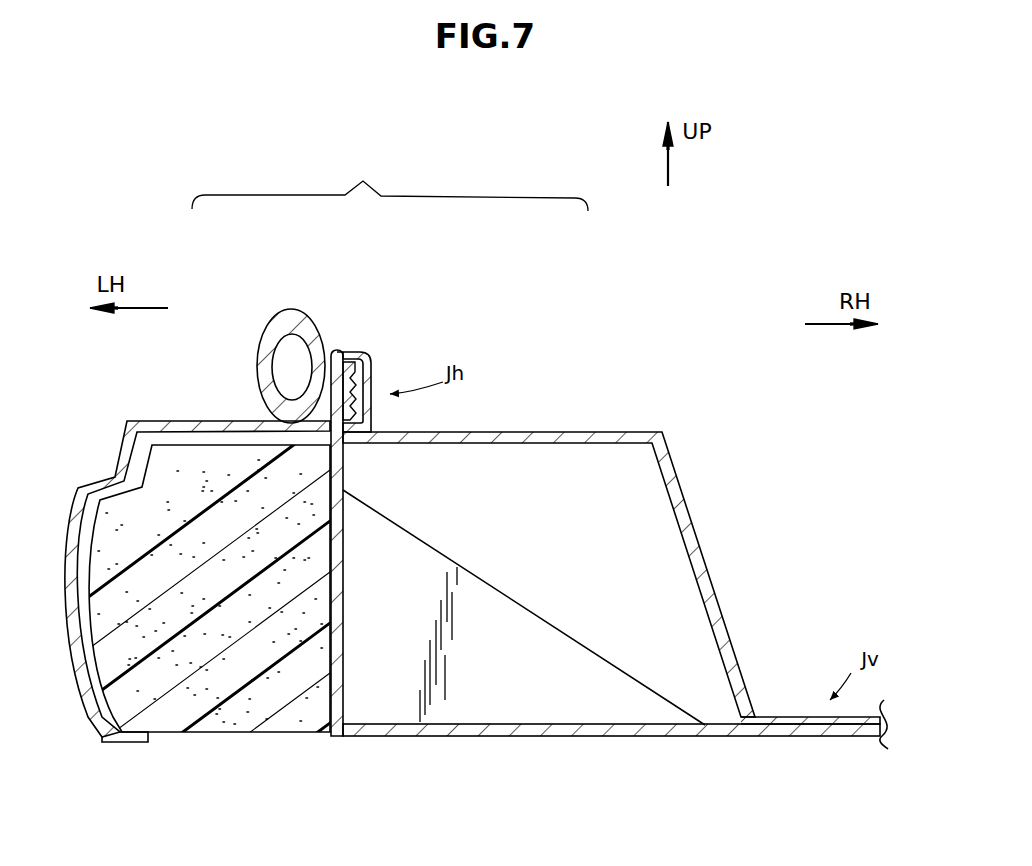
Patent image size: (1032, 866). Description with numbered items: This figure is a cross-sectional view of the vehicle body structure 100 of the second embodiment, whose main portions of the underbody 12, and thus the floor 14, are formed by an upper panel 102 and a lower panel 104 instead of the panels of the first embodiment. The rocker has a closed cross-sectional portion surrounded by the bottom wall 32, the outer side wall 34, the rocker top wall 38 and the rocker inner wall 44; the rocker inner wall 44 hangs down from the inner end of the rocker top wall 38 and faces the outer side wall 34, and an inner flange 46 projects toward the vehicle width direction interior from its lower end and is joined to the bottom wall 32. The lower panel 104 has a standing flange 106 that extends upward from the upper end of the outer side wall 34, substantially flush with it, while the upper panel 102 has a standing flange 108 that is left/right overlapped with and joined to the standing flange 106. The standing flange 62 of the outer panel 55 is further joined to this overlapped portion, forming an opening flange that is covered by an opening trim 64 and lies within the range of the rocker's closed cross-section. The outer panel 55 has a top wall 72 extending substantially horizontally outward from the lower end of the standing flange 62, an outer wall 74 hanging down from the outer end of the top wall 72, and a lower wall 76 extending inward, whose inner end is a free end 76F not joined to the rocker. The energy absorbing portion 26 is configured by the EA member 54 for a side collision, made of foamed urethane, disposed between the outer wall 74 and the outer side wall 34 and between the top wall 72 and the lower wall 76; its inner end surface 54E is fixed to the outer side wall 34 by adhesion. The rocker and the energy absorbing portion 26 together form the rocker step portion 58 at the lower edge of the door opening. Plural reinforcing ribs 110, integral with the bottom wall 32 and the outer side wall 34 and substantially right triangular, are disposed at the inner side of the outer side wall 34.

The rocker step portion 58 is at (390, 182).
The outer panel 55 is at (146, 418).
The top wall 72 is at (175, 421).
The outer wall 74 is at (72, 660).
The lower wall 76 is at (128, 742).
The free end 76F is at (150, 742).
The energy absorbing portion 26 is at (221, 325).
The EA member for a side collision 54 is at (262, 706).
The inner end surface 54E is at (343, 672).
The standing flange 62 is at (338, 350).
The outer side wall 34 is at (344, 592).
The opening trim 64 is at (292, 310).
The standing flange 106 is at (352, 358).
The standing flange 108 is at (368, 352).
The rocker top wall 38 is at (566, 432).
The vehicle body structure 100 is at (628, 378).
The upper panel 102 is at (716, 578).
The lower panel 104 is at (656, 716).
The floor 14 is at (817, 521).
The underbody 12 is at (817, 602).
The bottom wall 32 is at (626, 736).
The rocker inner wall 44 is at (744, 668).
The inner flange 46 is at (796, 718).
The reinforcing rib 110 is at (600, 660).